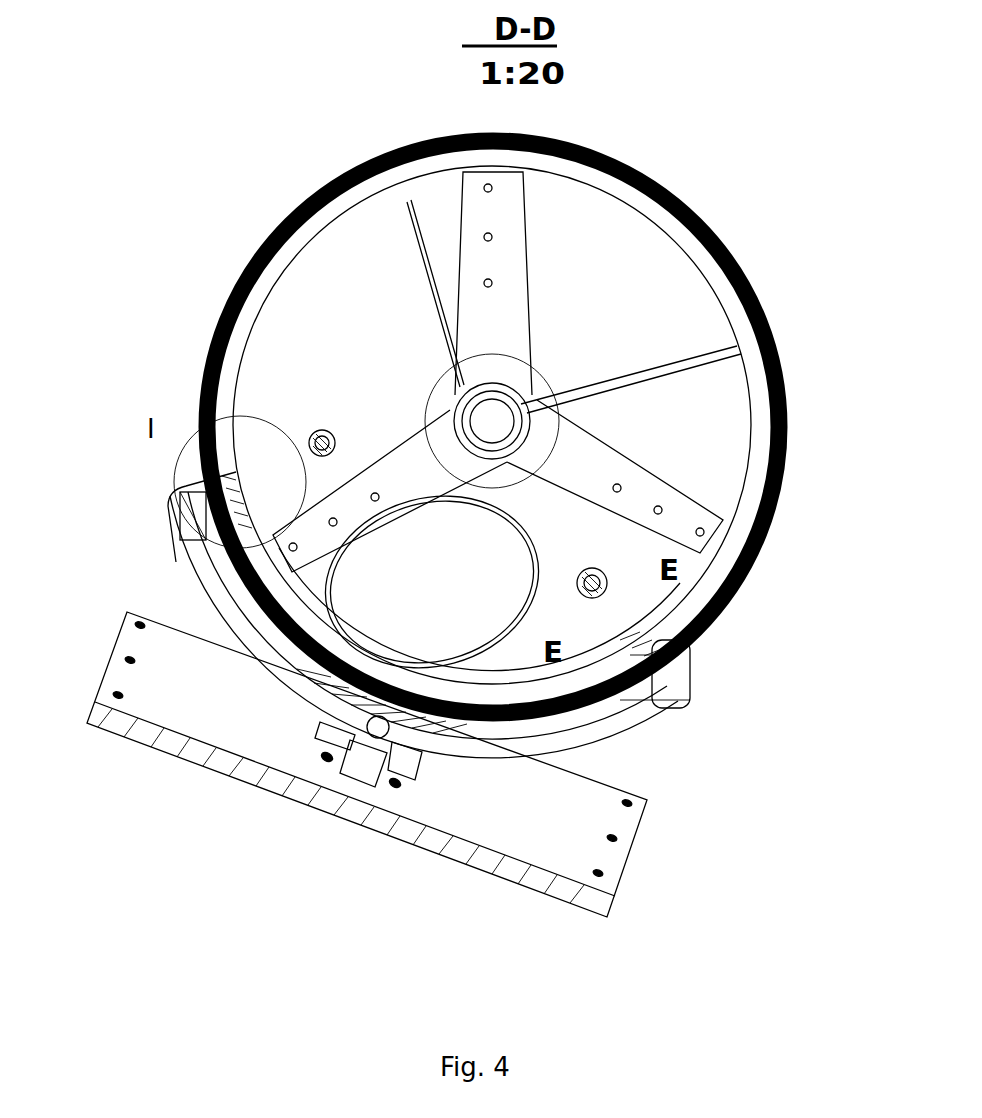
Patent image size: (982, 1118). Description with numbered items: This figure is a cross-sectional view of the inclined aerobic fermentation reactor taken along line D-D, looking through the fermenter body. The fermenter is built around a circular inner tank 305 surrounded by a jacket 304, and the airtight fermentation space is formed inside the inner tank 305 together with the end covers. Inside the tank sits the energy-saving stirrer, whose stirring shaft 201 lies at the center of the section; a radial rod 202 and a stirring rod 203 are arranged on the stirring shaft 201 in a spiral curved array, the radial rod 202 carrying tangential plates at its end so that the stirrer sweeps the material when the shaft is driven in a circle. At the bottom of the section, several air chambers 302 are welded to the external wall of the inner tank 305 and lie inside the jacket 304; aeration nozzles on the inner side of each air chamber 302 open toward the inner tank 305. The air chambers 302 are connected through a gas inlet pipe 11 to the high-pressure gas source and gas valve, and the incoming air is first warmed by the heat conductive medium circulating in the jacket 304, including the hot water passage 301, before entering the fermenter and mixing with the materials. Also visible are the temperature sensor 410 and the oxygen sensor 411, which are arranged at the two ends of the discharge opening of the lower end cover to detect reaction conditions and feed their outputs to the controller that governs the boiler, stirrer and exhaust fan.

The gas inlet pipe 11 is at (600, 740).
The stirring shaft 201 is at (527, 400).
The radial rod 202 is at (557, 444).
The stirring rod 203 is at (627, 483).
The hot water passage 301 is at (757, 492).
The air chamber 302 is at (172, 490).
The jacket 304 is at (226, 311).
The inner tank 305 is at (225, 310).
The temperature sensor 410 is at (320, 441).
The oxygen sensor 411 is at (590, 583).